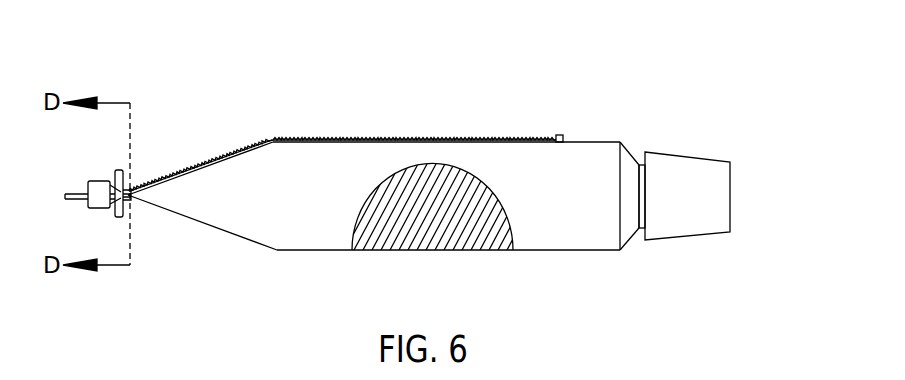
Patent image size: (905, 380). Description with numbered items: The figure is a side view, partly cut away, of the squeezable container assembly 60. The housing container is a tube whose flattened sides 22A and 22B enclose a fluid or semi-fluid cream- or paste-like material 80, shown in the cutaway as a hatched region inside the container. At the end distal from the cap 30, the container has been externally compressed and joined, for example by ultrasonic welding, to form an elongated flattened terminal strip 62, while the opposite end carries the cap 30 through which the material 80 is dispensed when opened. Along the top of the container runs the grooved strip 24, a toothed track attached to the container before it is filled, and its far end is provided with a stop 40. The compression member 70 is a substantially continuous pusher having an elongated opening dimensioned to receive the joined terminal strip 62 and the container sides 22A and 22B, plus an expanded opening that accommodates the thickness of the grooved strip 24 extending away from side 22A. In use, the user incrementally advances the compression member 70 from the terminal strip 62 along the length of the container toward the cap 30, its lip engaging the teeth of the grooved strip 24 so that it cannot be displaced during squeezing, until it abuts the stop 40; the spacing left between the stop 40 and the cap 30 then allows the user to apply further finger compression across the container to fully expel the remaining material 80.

The squeezable container assembly 60 is at (673, 95).
The housing container side 22A is at (295, 142).
The housing container side 22B is at (562, 252).
The grooved strip 24 is at (383, 140).
The stop 40 is at (558, 134).
The cap 30 is at (696, 142).
The contained material 80 is at (433, 218).
The compression member 70 is at (102, 181).
The terminal strip 62 is at (74, 200).